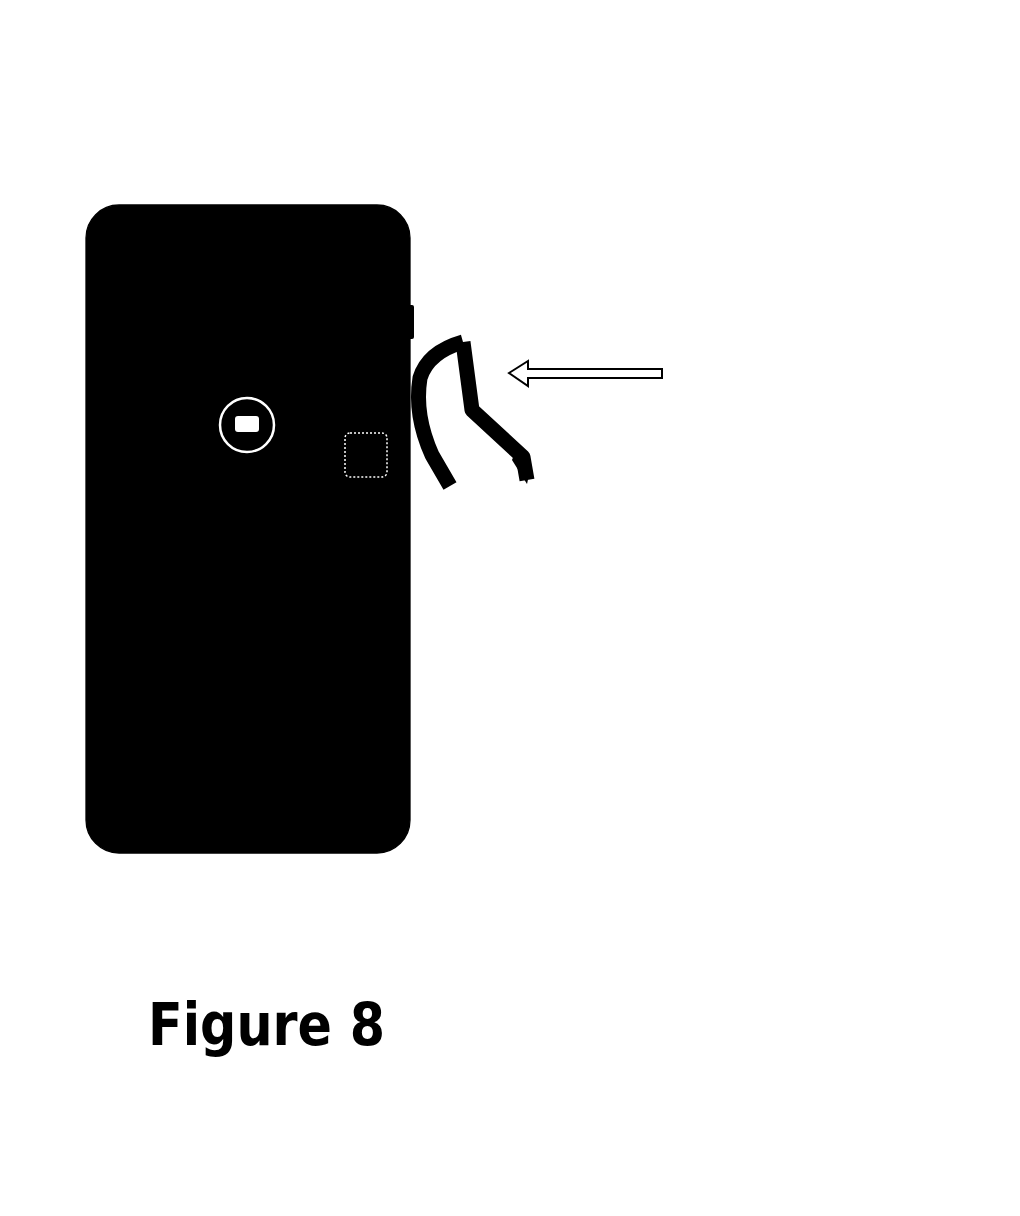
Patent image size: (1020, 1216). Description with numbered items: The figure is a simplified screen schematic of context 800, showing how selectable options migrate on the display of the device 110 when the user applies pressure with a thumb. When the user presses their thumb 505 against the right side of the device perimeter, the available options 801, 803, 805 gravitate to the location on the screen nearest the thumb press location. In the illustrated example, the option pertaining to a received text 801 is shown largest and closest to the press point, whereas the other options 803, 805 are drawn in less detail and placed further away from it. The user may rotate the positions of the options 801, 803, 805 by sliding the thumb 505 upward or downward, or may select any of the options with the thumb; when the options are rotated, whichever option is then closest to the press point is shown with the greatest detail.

The device context 800 is at (166, 103).
The device 110 is at (277, 205).
The option pertaining to a received text 801 is at (368, 290).
The option 803 is at (253, 398).
The option 805 is at (410, 505).
The thumb 505 is at (452, 342).